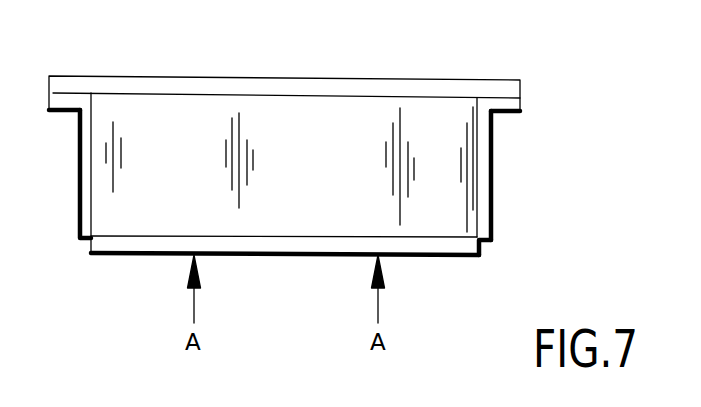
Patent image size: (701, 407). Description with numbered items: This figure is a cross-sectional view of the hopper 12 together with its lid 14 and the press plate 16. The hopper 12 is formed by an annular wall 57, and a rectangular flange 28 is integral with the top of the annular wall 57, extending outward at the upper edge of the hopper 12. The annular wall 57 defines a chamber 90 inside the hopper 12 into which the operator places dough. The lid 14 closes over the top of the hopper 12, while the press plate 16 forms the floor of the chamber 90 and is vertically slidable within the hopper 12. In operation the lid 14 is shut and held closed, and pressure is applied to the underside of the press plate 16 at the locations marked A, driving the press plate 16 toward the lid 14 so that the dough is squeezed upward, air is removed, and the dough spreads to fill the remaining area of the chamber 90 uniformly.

The lid 14 is at (493, 80).
The rectangular flange 28 is at (510, 115).
The hopper 12 is at (495, 177).
The annular wall 57 is at (492, 232).
The press plate 16 is at (418, 257).
The chamber 90 is at (335, 177).